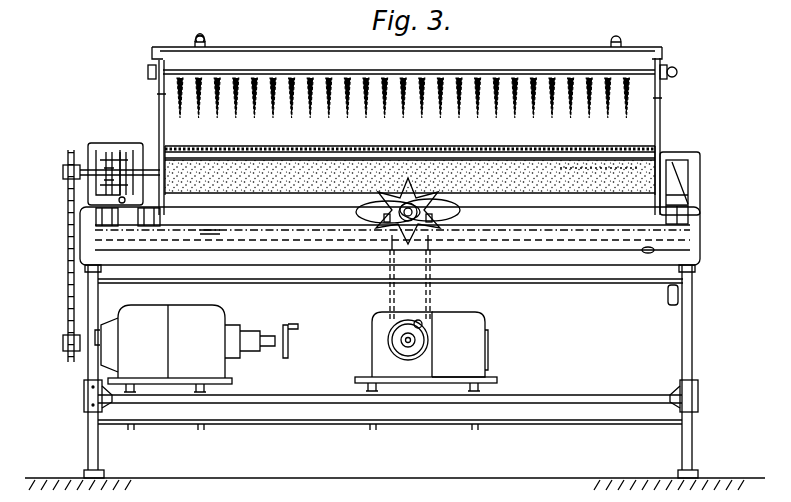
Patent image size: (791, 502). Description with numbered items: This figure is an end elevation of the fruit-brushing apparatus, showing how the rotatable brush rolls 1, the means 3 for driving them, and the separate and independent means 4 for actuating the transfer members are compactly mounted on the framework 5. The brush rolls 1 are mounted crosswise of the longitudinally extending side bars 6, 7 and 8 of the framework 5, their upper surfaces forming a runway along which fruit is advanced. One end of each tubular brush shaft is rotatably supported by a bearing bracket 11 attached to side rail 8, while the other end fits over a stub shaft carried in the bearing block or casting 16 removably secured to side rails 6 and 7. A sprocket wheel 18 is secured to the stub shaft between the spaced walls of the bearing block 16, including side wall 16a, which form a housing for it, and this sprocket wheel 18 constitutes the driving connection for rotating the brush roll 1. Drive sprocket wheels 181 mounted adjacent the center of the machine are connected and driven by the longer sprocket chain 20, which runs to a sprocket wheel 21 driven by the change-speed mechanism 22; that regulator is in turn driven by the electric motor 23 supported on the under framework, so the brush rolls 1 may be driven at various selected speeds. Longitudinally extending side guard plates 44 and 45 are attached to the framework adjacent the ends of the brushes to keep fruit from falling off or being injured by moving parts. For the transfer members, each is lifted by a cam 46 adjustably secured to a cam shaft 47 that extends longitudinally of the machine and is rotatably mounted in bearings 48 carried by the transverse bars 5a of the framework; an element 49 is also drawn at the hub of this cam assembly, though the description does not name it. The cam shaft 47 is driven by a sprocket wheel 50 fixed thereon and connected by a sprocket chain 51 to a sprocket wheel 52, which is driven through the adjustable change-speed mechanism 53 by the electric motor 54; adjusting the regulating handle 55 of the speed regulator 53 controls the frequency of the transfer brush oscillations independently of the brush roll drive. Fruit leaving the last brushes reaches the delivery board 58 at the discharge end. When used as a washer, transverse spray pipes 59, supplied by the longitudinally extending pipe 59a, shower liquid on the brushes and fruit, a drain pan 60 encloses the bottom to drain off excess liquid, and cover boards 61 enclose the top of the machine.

The brush roll 1 is at (275, 186).
The means for driving the rotatable members 3 is at (70, 258).
The means for actuating the transfer members 4 is at (376, 297).
The framework 5 is at (82, 440).
The transverse bar 5a is at (206, 236).
The side bar 6 is at (100, 226).
The side bar 7 is at (157, 228).
The side bar 8 is at (671, 225).
The bearing bracket 11 is at (682, 182).
The bearing block 16 is at (98, 186).
The side wall of bearing block 16a is at (121, 150).
The sprocket wheel 18 is at (118, 167).
The sprocket chain 20 is at (68, 316).
The sprocket wheel 21 is at (69, 354).
The change-speed mechanism 22 is at (146, 313).
The electric motor 23 is at (230, 344).
The side guard plate 44 is at (165, 130).
The side guard plate 45 is at (655, 135).
The cam 46 is at (442, 196).
The cam shaft 47 is at (447, 211).
The bearing 48 is at (387, 229).
The sprocket hub 49 is at (378, 196).
The sprocket wheel 50 is at (434, 234).
The sprocket chain 51 is at (431, 300).
The sprocket wheel 52 is at (427, 341).
The change-speed mechanism 53 is at (373, 347).
The electric motor 54 is at (480, 361).
The regulating handle 55 is at (417, 320).
The delivery board 58 is at (606, 158).
The spray pipe 59 is at (251, 76).
The longitudinally extending pipe 59a is at (678, 73).
The drain pan 60 is at (582, 268).
The cover board 61 is at (304, 48).
The drive sprocket wheel 181 is at (67, 157).